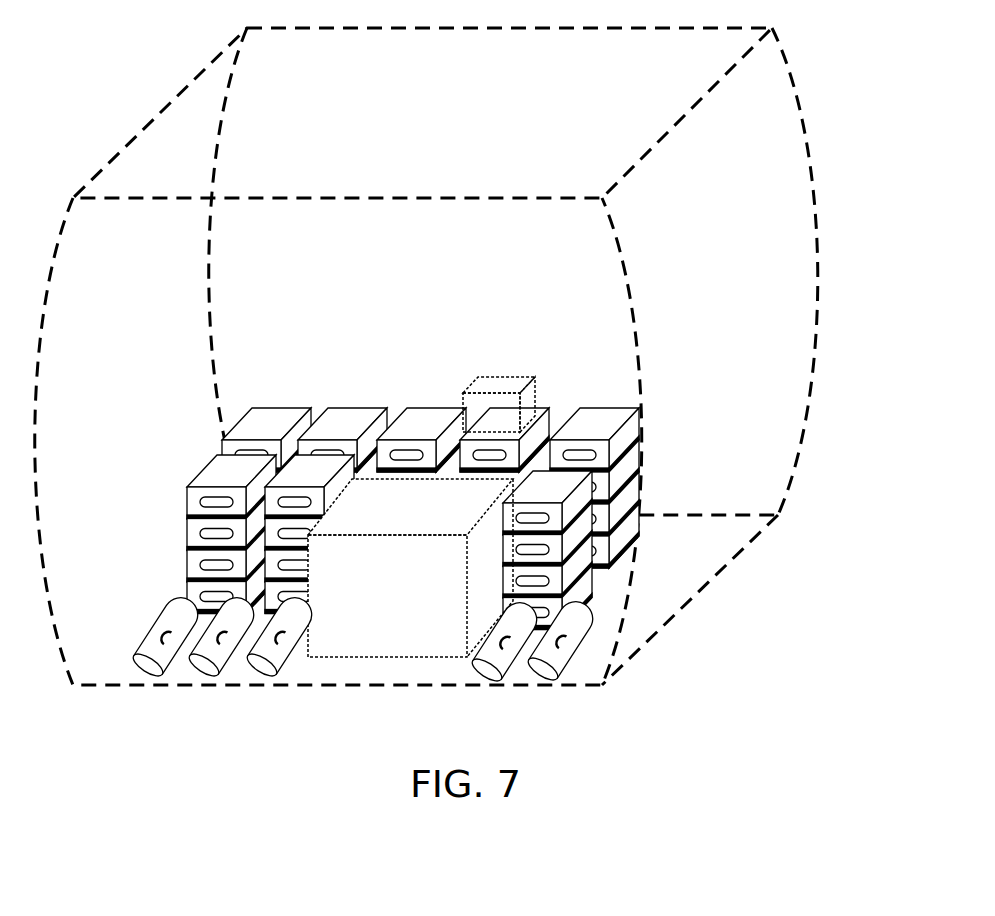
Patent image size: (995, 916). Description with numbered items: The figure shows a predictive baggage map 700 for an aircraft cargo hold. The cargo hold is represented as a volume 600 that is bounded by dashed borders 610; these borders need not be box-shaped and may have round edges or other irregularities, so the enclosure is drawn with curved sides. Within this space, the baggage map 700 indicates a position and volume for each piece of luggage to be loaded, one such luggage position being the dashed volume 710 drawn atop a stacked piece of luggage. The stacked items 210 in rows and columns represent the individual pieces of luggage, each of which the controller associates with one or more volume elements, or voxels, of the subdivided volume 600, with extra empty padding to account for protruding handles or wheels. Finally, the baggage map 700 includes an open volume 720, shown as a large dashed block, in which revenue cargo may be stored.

The volume 600 is at (768, 132).
The borders 610 is at (817, 265).
The predictive baggage map 700 is at (789, 601).
The storage bin 210 is at (262, 410).
The volume 710 is at (527, 392).
The open volume 720 is at (398, 608).